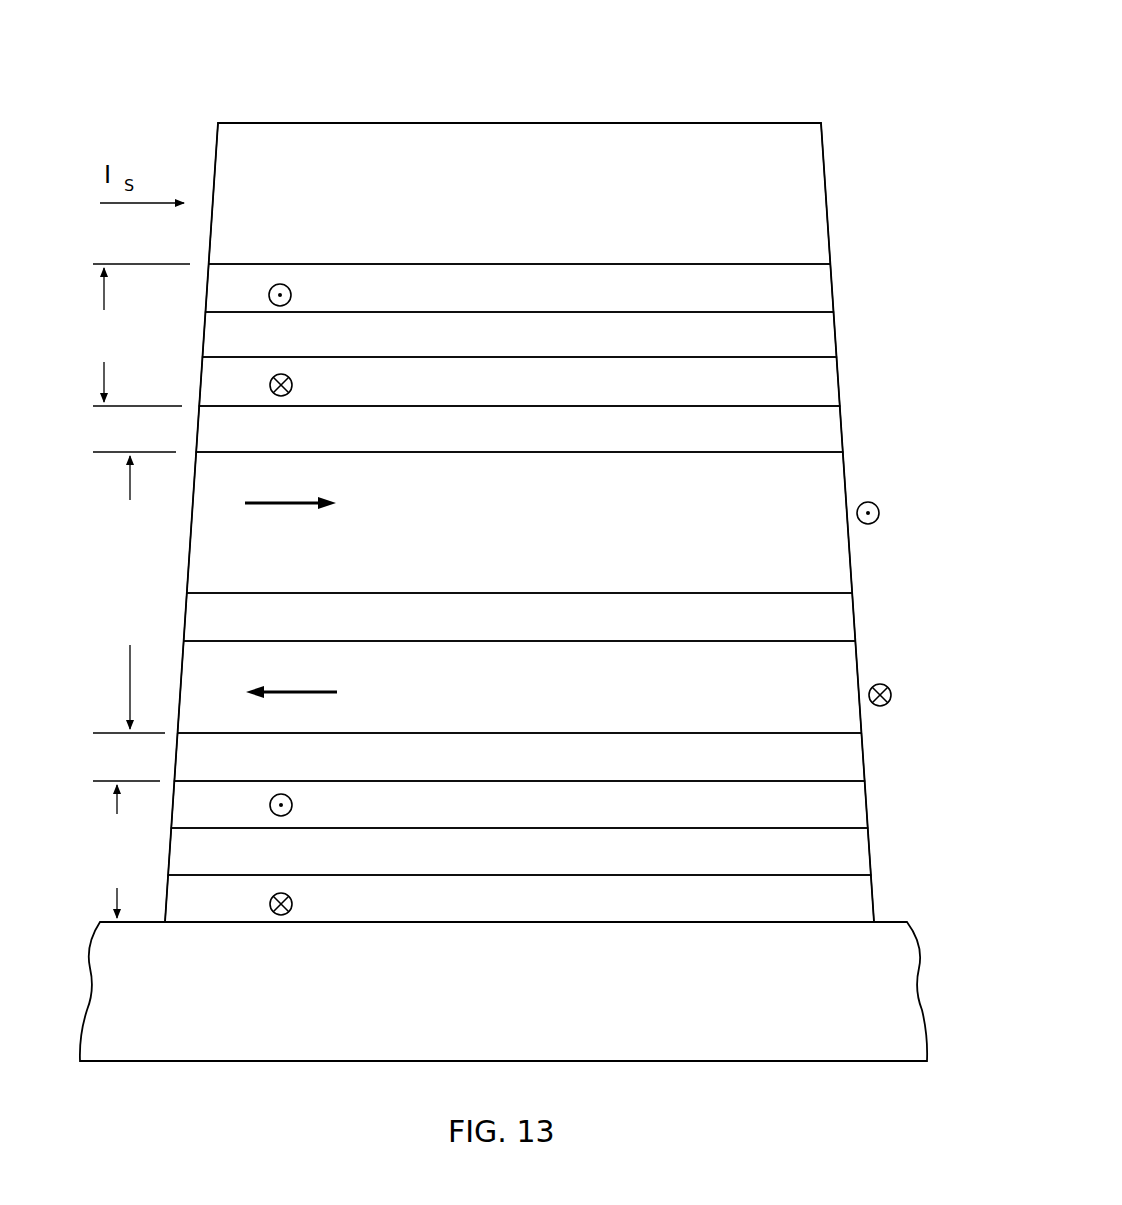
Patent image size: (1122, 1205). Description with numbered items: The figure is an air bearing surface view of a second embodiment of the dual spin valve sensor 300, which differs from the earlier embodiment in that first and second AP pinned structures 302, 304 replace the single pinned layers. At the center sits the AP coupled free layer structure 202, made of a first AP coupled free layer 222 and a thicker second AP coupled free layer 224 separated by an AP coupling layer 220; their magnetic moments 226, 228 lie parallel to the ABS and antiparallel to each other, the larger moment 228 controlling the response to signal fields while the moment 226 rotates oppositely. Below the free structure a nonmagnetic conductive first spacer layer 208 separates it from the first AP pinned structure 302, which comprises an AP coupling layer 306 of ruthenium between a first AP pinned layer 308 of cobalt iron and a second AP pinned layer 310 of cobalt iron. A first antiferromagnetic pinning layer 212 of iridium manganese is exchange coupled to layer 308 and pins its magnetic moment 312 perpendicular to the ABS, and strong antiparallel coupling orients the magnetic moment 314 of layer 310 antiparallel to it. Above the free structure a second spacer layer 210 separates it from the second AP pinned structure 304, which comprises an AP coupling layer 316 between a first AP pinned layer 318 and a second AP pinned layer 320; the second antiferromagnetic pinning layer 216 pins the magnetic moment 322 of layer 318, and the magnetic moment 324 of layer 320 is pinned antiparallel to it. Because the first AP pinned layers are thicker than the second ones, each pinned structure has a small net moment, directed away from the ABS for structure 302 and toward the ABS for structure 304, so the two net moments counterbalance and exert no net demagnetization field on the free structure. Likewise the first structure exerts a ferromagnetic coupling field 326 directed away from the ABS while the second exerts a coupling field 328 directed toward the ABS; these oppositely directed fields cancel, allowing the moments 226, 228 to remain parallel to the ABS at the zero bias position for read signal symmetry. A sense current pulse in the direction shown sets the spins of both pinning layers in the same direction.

The spin valve sensor 300 is at (740, 106).
The second antiferromagnetic pinning layer 216 is at (800, 180).
The first AP pinned layer of second AP pinned structure 318 is at (822, 294).
The AP coupling layer of second AP pinned structure 316 is at (825, 341).
The second AP pinned layer of second AP pinned structure 320 is at (826, 384).
The second spacer layer 210 is at (828, 435).
The second AP coupled free layer 224 is at (787, 517).
The AP coupling layer of free layer structure 220 is at (830, 619).
The first AP coupled free layer 222 is at (779, 702).
The first spacer layer 208 is at (825, 759).
The second AP pinned layer of first AP pinned structure 310 is at (830, 803).
The AP coupling layer of first AP pinned structure 306 is at (838, 859).
The first AP pinned layer of first AP pinned structure 308 is at (838, 906).
The first antiferromagnetic pinning layer 212 is at (803, 998).
The second AP pinned structure 304 is at (141, 335).
The AP coupled free layer structure 202 is at (128, 592).
The first AP pinned structure 302 is at (106, 849).
The magnetic moment of first AP pinned layer 318 322 is at (289, 287).
The magnetic moment of second AP pinned layer 320 324 is at (288, 396).
The magnetic moment of second AP pinned layer 310 314 is at (280, 793).
The magnetic moment of first AP pinned layer 308 312 is at (277, 893).
The ferromagnetic coupling field from second AP pinned structure 328 is at (873, 502).
The ferromagnetic coupling field from first AP pinned structure 326 is at (882, 684).
The magnetic moment of second AP coupled free layer 228 is at (290, 500).
The magnetic moment of first AP coupled free layer 226 is at (287, 690).